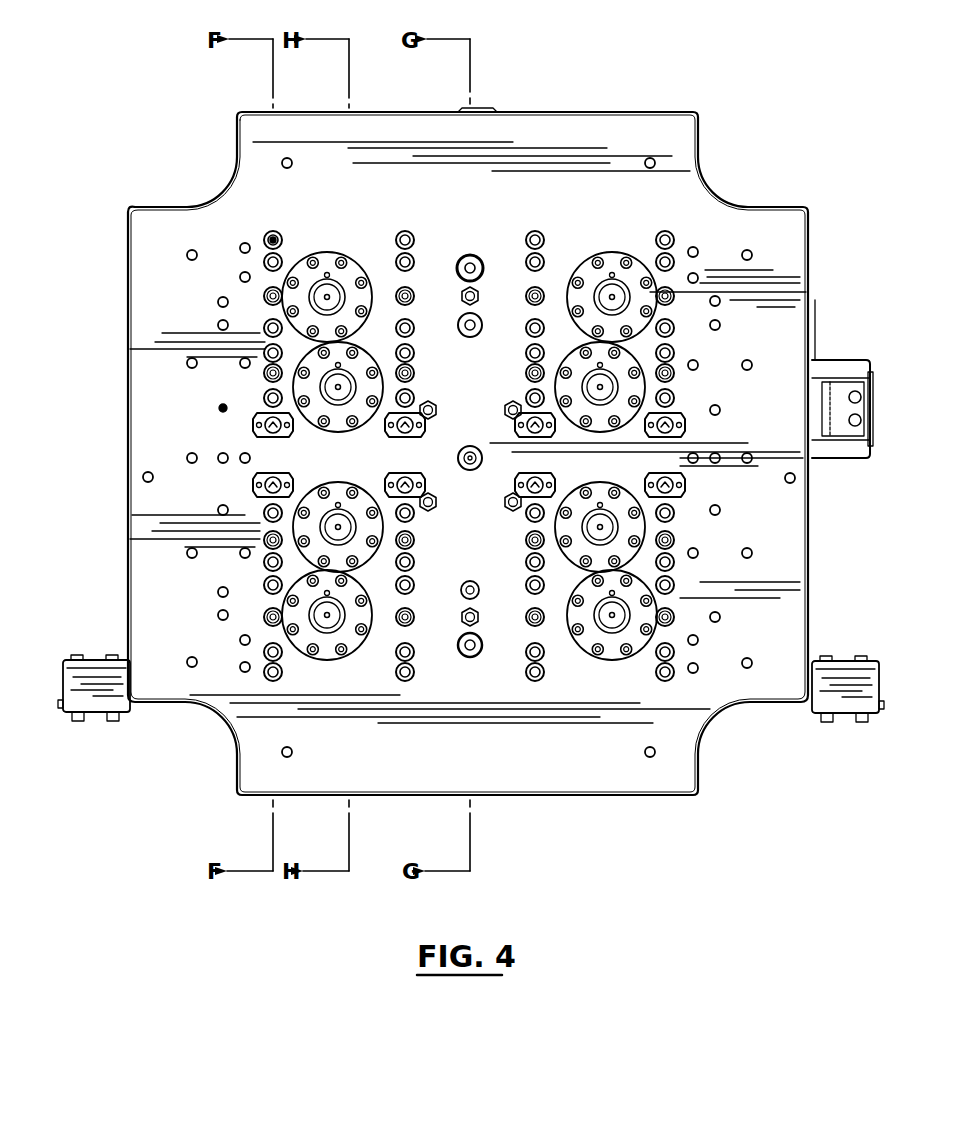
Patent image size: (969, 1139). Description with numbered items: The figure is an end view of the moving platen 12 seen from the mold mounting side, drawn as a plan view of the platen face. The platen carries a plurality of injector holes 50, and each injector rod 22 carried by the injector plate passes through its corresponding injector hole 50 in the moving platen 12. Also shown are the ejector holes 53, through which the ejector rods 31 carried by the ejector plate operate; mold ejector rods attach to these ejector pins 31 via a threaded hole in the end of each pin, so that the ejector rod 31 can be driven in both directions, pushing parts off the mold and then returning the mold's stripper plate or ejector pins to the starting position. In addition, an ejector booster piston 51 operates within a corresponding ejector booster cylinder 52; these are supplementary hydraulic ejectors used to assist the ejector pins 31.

The moving platen 12 is at (650, 134).
The injector rod 22 is at (262, 240).
The ejector rod 31 is at (486, 264).
The injector hole 50 is at (272, 240).
The ejector booster piston 51 is at (335, 385).
The ejector booster cylinder 52 is at (262, 420).
The ejector hole 53 is at (482, 260).